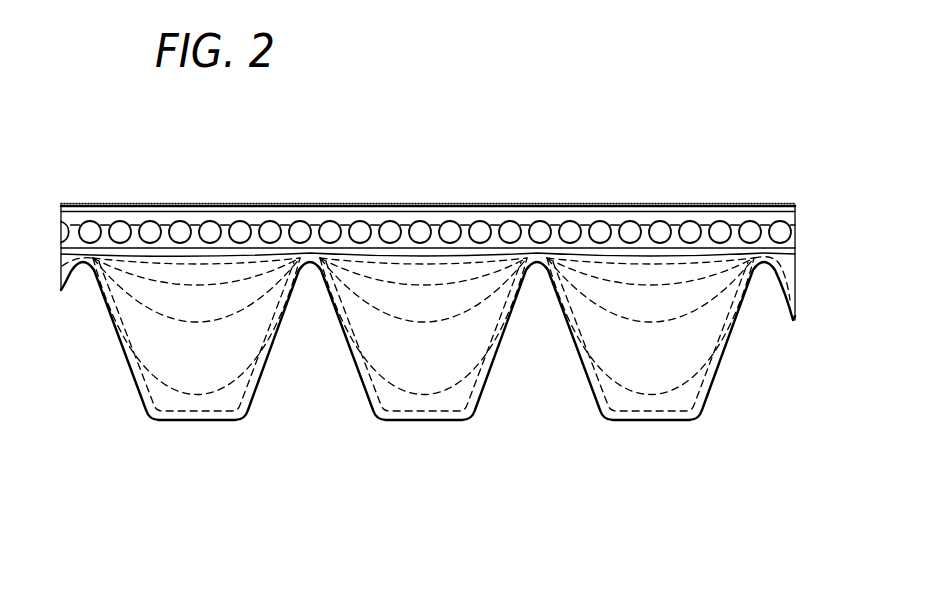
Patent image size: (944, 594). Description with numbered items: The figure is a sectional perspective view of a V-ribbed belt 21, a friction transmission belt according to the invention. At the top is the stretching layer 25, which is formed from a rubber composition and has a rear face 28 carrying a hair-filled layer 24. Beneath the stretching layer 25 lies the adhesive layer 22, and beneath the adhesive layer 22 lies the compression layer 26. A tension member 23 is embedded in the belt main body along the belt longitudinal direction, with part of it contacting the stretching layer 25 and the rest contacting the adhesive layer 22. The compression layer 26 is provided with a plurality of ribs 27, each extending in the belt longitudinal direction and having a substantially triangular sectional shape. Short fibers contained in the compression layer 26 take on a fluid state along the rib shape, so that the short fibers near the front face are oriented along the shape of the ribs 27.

The V-ribbed belt 21 is at (405, 186).
The adhesive layer 22 is at (822, 223).
The tension member 23 is at (752, 228).
The hair-filled layer 24 is at (613, 206).
The stretching layer 25 is at (822, 203).
The compression layer 26 is at (817, 253).
The rib 27 is at (655, 421).
The rear face 28 is at (701, 206).